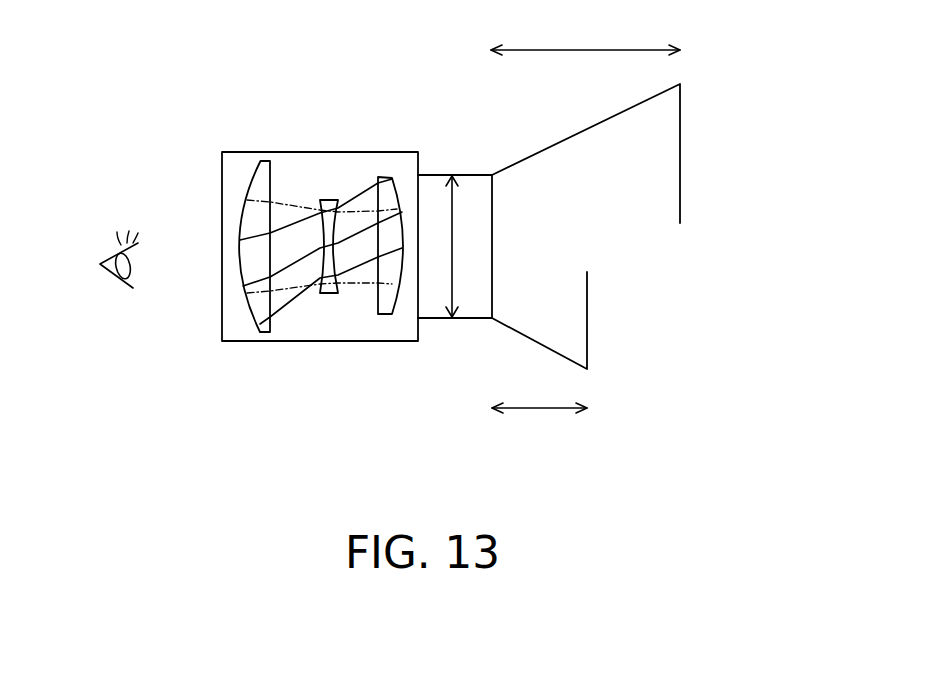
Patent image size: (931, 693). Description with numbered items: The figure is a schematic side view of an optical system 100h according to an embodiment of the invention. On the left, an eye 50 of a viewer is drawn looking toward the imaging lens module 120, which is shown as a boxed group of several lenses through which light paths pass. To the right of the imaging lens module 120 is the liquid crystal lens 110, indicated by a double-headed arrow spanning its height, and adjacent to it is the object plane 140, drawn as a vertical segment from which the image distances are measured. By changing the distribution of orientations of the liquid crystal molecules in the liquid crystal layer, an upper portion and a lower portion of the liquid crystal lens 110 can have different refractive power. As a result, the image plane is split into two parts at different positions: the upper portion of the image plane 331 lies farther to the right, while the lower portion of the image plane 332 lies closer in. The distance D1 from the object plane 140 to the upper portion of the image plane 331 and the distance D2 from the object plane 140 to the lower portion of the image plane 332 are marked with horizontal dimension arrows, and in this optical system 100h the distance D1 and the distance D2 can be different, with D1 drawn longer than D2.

The eye of user 50 is at (112, 257).
The liquid crystal lens 110 is at (453, 217).
The imaging lens module 120 is at (320, 152).
The object plane 140 is at (492, 252).
The upper portion of the image plane 331 is at (681, 140).
The lower portion of the image plane 332 is at (588, 322).
The optical system 100h is at (757, 441).
The distance D1 is at (585, 33).
The distance D2 is at (539, 426).